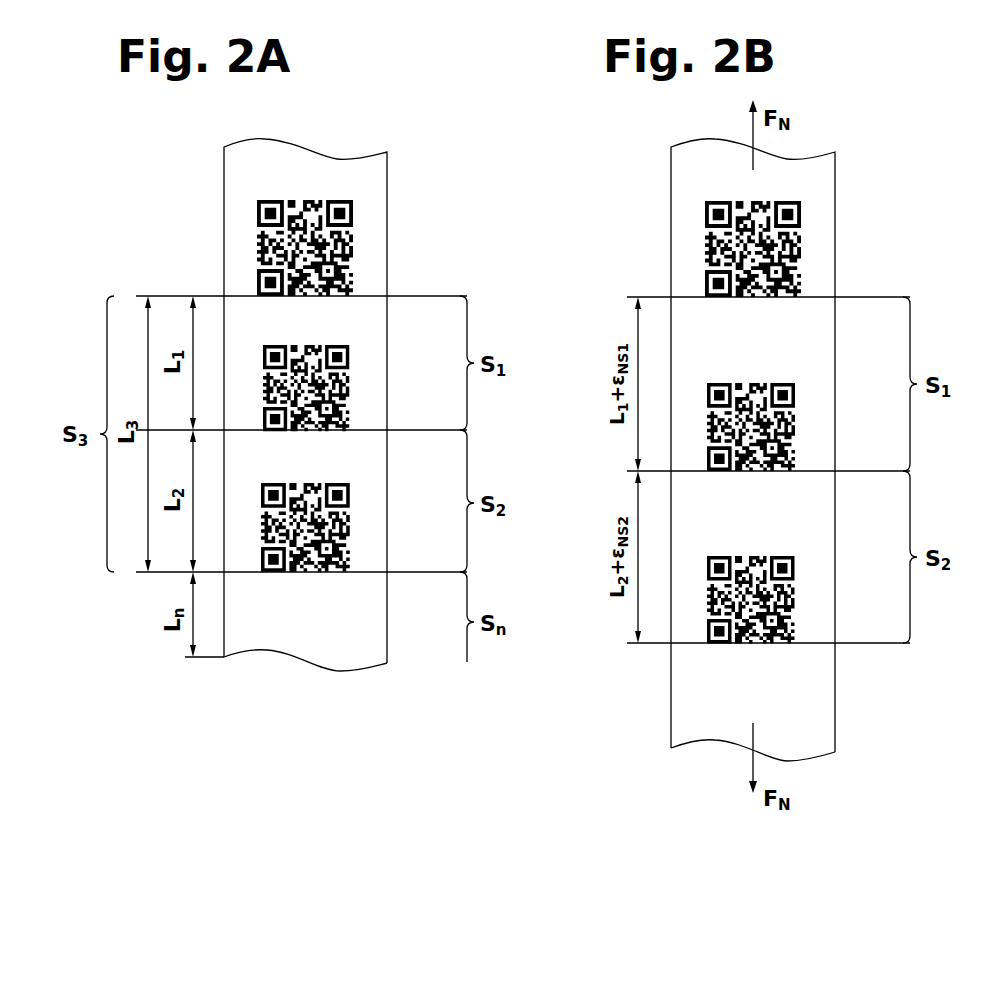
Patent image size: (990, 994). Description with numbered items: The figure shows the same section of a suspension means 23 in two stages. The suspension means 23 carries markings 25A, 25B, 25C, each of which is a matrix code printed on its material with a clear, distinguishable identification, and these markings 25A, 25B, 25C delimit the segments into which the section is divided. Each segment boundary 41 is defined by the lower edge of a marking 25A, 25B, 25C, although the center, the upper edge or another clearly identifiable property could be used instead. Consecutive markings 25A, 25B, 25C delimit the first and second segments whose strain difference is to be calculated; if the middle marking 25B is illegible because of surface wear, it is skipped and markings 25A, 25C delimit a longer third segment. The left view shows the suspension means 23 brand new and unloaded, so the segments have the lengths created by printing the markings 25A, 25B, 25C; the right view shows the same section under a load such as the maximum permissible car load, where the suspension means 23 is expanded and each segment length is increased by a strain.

In FIG. 2A, the suspension means 23 is at (355, 183).
In FIG. 2B, the suspension means 23 is at (803, 183).
In FIG. 2A, the marking 25A is at (352, 245).
In FIG. 2B, the marking 25A is at (800, 245).
In FIG. 2A, the marking 25B is at (347, 390).
In FIG. 2B, the marking 25B is at (795, 431).
In FIG. 2A, the marking 25C is at (348, 540).
In FIG. 2B, the marking 25C is at (795, 612).
In FIG. 2A, the segment boundary 41 is at (250, 304).